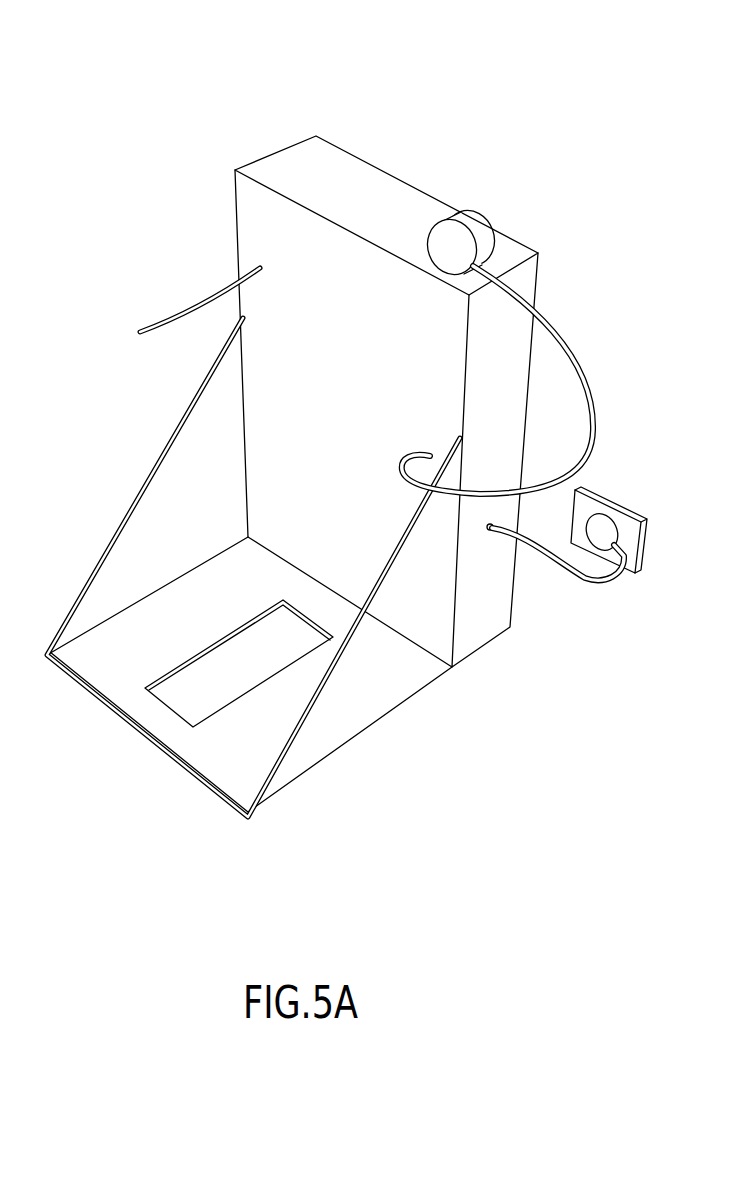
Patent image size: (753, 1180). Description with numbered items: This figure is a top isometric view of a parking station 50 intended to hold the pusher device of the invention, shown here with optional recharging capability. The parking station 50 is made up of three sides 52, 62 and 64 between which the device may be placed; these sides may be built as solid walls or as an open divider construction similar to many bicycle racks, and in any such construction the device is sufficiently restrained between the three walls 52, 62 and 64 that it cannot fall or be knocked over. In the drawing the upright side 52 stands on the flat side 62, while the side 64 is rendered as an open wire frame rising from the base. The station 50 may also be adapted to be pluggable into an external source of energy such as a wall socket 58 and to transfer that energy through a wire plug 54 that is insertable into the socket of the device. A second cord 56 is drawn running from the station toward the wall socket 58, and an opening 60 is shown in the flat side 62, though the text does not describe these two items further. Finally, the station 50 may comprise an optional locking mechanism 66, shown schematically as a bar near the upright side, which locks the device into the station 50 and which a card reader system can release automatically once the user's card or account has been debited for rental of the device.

The parking station 50 is at (432, 100).
The side 52 is at (415, 197).
The wire plug 54 is at (585, 383).
The connector cable 56 is at (583, 582).
The wall socket 58 is at (625, 510).
The slot 60 is at (178, 703).
The side 62 is at (380, 697).
The side 64 is at (172, 477).
The locking mechanism 66 is at (195, 307).